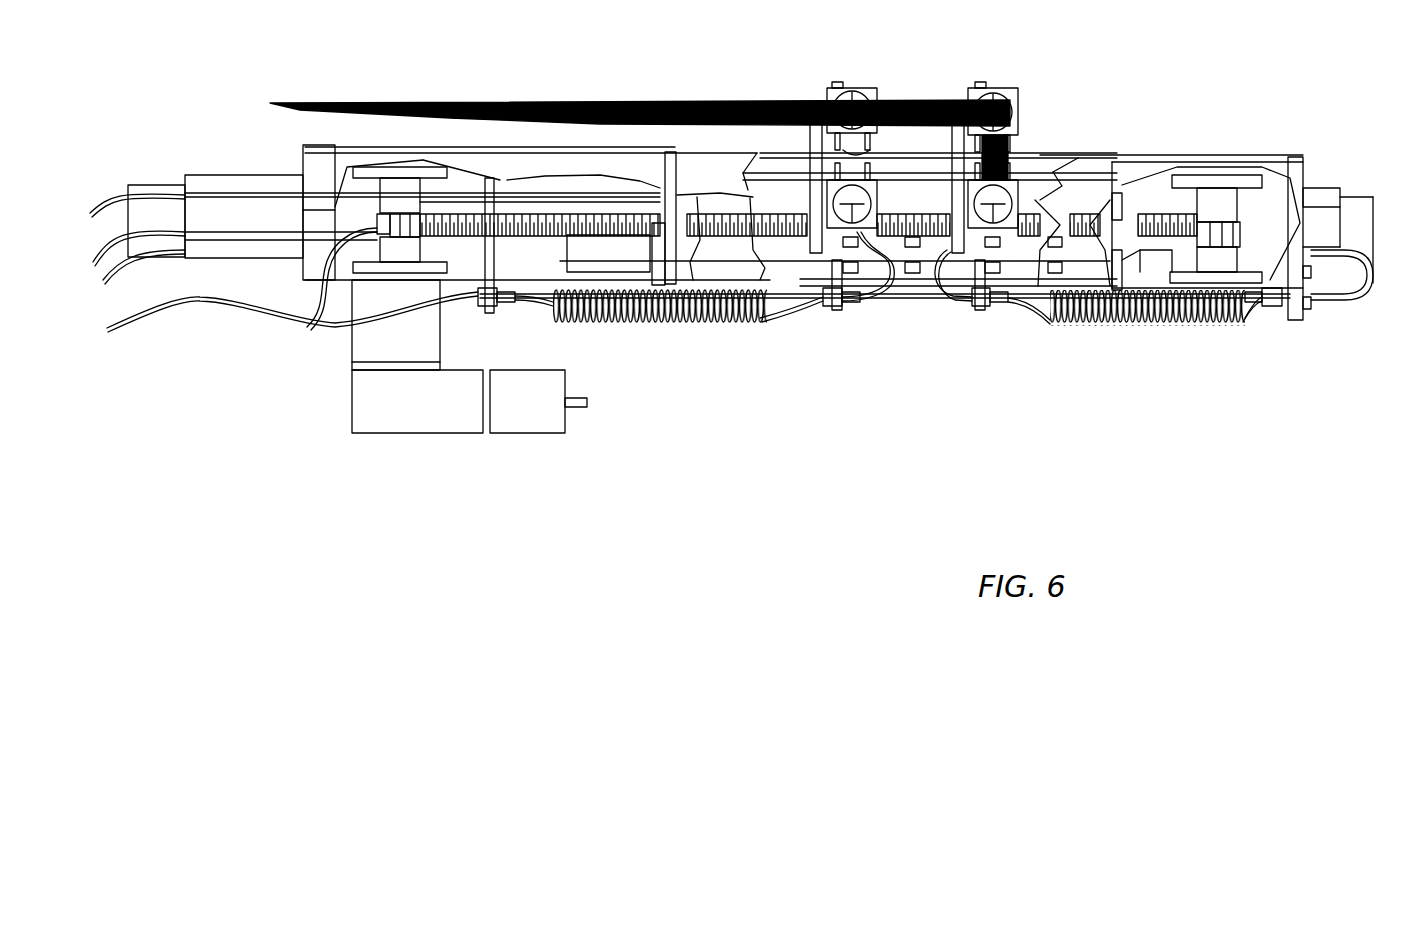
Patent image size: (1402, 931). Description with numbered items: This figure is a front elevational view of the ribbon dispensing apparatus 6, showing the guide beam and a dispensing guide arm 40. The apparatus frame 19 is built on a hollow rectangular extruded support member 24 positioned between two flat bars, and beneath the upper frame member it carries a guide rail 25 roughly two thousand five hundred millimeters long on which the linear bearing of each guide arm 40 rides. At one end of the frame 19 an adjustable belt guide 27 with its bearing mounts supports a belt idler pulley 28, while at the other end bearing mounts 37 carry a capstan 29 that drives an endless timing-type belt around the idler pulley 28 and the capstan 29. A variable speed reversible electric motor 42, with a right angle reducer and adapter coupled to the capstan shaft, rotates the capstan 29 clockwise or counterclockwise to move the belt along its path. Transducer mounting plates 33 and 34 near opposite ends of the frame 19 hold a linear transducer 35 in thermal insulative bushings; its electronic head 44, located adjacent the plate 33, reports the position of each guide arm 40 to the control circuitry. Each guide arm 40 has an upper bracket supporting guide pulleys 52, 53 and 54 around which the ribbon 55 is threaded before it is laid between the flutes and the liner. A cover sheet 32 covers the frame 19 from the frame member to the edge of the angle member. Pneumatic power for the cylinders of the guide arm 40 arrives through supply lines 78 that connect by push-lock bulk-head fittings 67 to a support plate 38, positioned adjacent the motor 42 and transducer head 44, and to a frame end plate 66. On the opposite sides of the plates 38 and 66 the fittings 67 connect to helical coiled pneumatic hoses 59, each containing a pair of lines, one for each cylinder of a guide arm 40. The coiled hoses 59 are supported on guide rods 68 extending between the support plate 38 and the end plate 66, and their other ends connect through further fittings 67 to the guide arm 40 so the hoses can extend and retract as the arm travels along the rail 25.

The ribbon dispensing apparatus 6 is at (206, 119).
The apparatus frame 19 is at (235, 262).
The hollow rectangular extruded support member 24 is at (270, 175).
The guide rail 25 is at (782, 175).
The adjustable belt guide 27 is at (1197, 178).
The belt idler pulley 28 is at (1237, 235).
The capstan 29 is at (307, 327).
The cover sheet 32 is at (1077, 157).
The transducer mounting plate 33 is at (680, 268).
The transducer mounting plate 34 is at (1122, 205).
The linear transducer 35 is at (915, 262).
The bearing mounts 37 is at (412, 167).
The support plate 38 is at (494, 263).
The dispensing guide arm 40 is at (873, 86).
The variable speed reversible electric motor 42 is at (515, 433).
The transducer head 44 is at (633, 265).
The guide pulley 52 is at (828, 98).
The guide pulley 53 is at (852, 150).
The guide pulley 54 is at (852, 200).
The ribbon 55 is at (607, 100).
The helical coiled pneumatic hose 59 is at (742, 318).
The frame end plate 66 is at (1290, 320).
The push-lock bulk-head fitting 67 is at (500, 313).
The guide rod 68 is at (953, 303).
The pneumatic supply line 78 is at (150, 327).